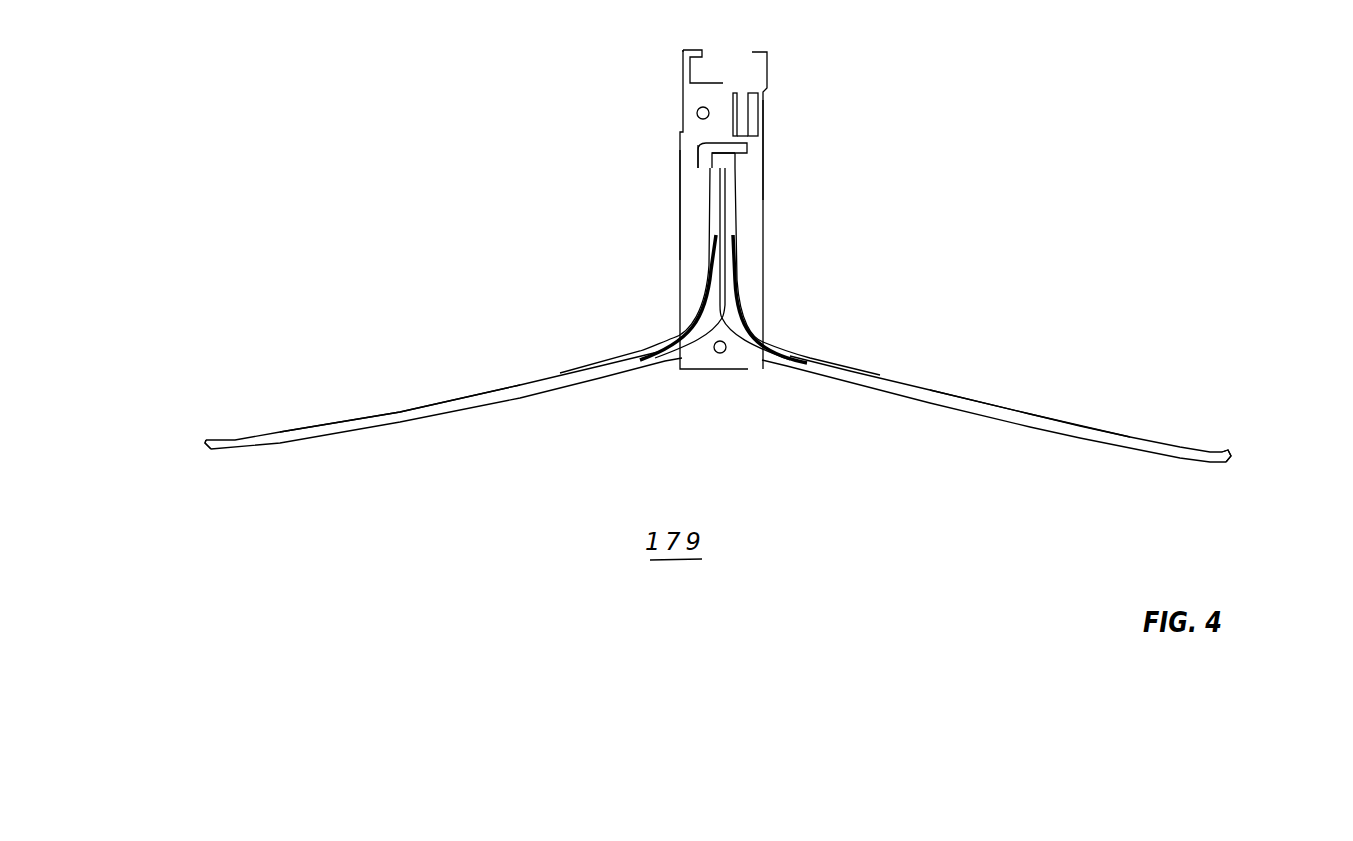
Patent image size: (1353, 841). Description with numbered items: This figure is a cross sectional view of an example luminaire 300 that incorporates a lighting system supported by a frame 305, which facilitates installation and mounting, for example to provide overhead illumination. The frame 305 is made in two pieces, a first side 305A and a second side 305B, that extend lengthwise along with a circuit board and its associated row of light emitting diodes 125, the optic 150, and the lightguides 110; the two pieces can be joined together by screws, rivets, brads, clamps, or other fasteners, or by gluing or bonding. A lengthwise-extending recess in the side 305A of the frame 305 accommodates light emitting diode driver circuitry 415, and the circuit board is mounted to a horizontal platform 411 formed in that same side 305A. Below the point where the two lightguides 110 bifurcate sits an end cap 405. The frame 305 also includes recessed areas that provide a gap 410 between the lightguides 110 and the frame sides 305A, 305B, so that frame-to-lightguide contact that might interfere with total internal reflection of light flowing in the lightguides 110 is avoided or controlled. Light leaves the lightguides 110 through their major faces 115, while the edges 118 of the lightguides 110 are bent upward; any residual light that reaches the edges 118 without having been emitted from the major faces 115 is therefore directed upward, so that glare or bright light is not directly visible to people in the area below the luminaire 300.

The luminaire 300 is at (1054, 81).
The frame 305 is at (752, 193).
The frame side 305A is at (765, 162).
The frame side 305B is at (679, 196).
The light emitting diode driver circuitry 415 is at (768, 106).
The horizontal platform 411 is at (742, 143).
The optic 150 is at (716, 185).
The light emitting diodes 125 is at (700, 147).
The gap 410 is at (712, 248).
The end cap 405 is at (724, 362).
The lightguides 110 is at (520, 385).
The major faces 115 is at (438, 402).
The edges 118 is at (188, 435).